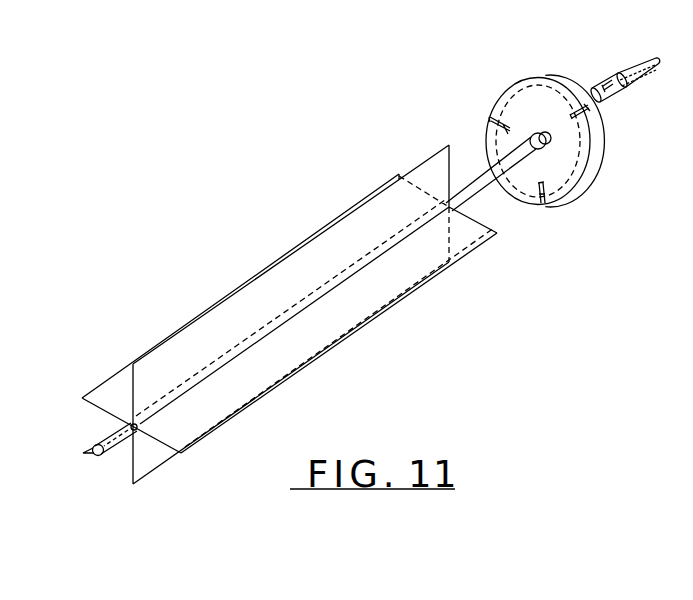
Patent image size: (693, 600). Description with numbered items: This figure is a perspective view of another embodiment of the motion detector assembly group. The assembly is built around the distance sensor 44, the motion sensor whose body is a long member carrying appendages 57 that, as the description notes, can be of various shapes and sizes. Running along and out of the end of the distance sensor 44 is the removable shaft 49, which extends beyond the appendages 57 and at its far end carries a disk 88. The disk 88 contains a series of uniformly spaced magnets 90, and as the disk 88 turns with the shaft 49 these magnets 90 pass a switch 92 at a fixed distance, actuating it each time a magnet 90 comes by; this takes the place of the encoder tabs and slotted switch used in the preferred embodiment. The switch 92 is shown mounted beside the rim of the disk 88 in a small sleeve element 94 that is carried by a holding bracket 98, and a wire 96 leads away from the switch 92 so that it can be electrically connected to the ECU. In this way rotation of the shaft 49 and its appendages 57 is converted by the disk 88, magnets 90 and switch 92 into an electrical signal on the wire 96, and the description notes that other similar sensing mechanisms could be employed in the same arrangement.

The distance sensor 44 is at (231, 427).
The shaft 49 is at (95, 453).
The appendages 57 is at (440, 281).
The disk 88 is at (593, 170).
The magnet 90 is at (490, 119).
The switch 92 is at (607, 84).
The sleeve 94 is at (623, 78).
The wire 96 is at (652, 53).
The holding bracket 98 is at (636, 85).